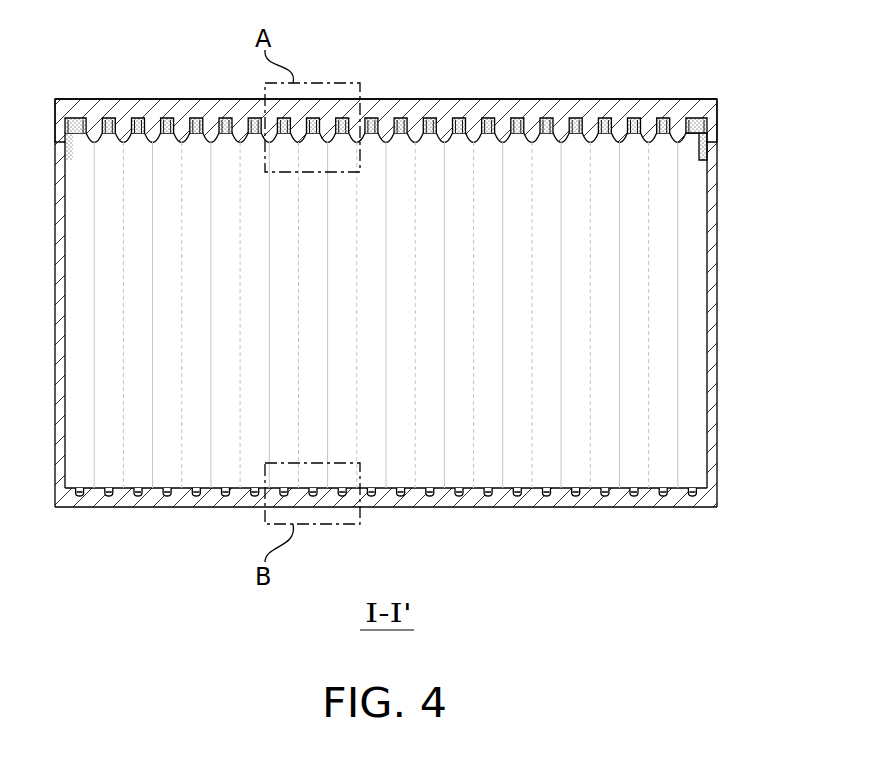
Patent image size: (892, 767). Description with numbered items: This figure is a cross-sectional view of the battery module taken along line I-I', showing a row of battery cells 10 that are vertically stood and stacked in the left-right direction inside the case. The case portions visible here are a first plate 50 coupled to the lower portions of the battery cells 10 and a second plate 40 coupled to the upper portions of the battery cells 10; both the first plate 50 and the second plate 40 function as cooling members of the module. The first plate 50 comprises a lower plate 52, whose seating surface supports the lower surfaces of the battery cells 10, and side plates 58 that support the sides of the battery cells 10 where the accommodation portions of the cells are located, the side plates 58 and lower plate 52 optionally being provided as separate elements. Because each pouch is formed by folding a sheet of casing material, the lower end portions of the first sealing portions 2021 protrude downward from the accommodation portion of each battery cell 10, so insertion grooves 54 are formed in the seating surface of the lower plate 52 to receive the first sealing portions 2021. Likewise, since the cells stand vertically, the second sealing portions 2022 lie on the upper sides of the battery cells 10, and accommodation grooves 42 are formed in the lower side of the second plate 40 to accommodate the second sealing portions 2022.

The battery cell 10 is at (693, 320).
The second plate 40 is at (588, 113).
The accommodation groove 42 is at (517, 125).
The second sealing portion 2022 is at (700, 128).
The first sealing portion 2021 is at (605, 496).
The first plate 50 is at (755, 578).
The lower plate 52 is at (654, 504).
The insertion groove 54 is at (517, 496).
The side plate 58 is at (716, 405).